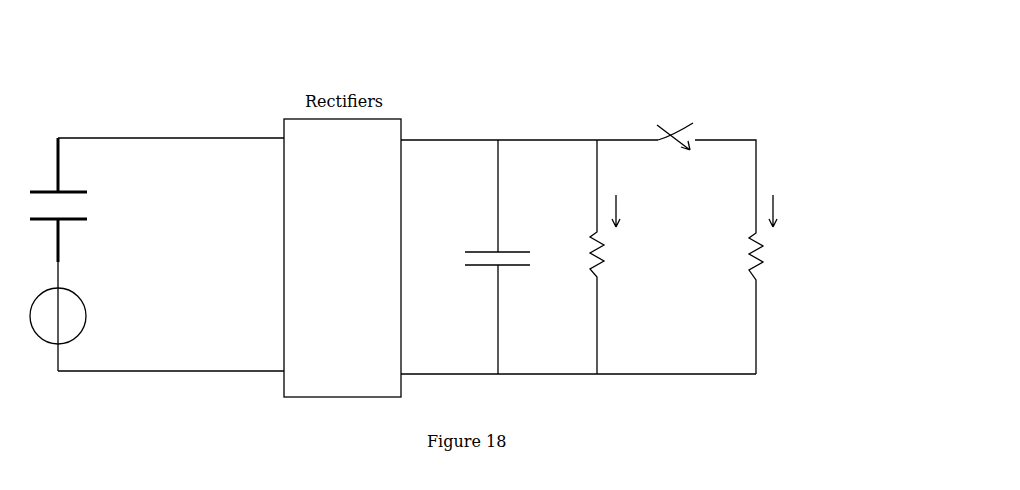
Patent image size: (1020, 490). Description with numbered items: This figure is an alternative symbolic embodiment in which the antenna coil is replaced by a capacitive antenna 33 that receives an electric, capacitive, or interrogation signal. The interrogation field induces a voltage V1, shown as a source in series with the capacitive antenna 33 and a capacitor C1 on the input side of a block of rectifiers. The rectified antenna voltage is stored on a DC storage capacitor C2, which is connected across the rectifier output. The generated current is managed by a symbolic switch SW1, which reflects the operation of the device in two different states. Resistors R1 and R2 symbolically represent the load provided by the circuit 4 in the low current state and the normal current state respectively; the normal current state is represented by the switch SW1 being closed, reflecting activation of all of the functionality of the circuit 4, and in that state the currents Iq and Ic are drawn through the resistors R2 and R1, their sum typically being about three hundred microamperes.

The capacitive antenna 33 is at (107, 160).
The circuit 4 is at (756, 197).
The capacitor C1 is at (80, 205).
The voltage V1 is at (81, 316).
The DC storage capacitor C2 is at (512, 257).
The resistor R2 is at (635, 257).
The resistor R1 is at (746, 257).
The symbolic switch SW1 is at (678, 124).